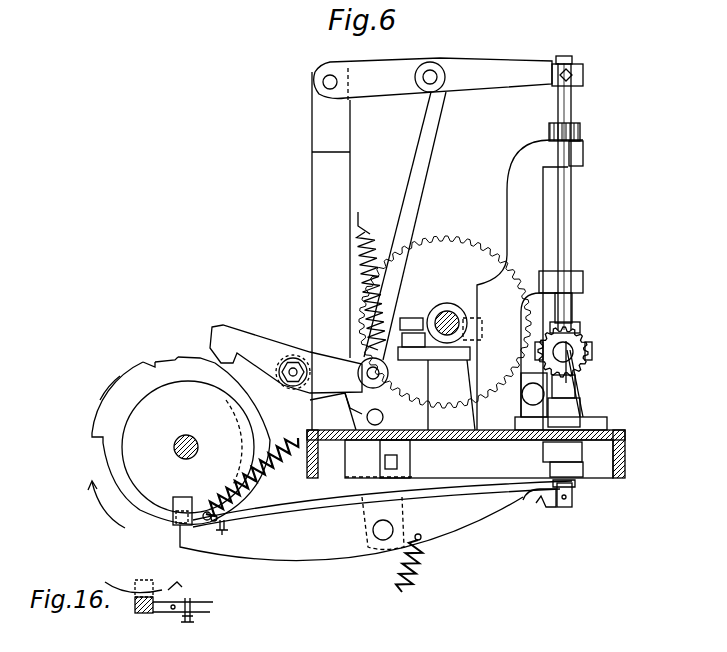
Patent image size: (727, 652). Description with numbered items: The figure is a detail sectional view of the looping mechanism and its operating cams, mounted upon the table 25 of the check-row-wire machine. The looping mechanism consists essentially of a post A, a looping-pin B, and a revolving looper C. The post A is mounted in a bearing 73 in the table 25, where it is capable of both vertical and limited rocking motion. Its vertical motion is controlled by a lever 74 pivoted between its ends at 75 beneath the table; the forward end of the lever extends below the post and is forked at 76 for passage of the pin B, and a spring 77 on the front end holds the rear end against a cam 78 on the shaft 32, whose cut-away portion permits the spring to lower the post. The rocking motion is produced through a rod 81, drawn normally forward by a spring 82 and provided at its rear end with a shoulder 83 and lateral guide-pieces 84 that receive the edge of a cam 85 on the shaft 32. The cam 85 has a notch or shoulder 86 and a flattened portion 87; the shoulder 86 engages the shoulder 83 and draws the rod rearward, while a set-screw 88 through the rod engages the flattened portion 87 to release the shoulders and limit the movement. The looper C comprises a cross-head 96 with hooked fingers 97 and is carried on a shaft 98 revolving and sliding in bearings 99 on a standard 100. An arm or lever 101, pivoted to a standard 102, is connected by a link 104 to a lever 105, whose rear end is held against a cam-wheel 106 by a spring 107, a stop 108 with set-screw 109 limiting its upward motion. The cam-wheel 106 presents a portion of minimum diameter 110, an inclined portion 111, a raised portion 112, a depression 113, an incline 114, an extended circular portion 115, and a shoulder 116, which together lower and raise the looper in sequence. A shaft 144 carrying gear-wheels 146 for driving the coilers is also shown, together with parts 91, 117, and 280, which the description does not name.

In FIG. 6, the table 25 is at (627, 457).
In FIG. 6, the shaft 32 is at (190, 434).
In FIG. 6, the bearing 73 is at (586, 411).
In FIG. 6, the lever 74 is at (461, 533).
In FIG. 6, the pivot 75 is at (382, 542).
In FIG. 6, the fork 76 is at (574, 498).
In FIG. 6, the spring 77 is at (423, 565).
In FIG. 6, the cam 78 is at (234, 412).
In FIG. 6, the rod 81 is at (273, 508).
In FIG. 16, the rod 81 is at (205, 612).
In FIG. 6, the spring 82 is at (281, 460).
In FIG. 16, the shoulder 83 is at (146, 614).
In FIG. 6, the lateral guide-pieces 84 is at (184, 496).
In FIG. 16, the lateral guide-pieces 84 is at (168, 522).
In FIG. 6, the cam 85 is at (188, 447).
In FIG. 16, the cam 85 is at (128, 592).
In FIG. 6, the notch or shoulder 86 is at (215, 508).
In FIG. 16, the notch or shoulder 86 is at (184, 588).
In FIG. 6, the flattened portion 87 is at (232, 489).
In FIG. 6, the set-screw 88 is at (226, 531).
In FIG. 16, the set-screw 88 is at (188, 624).
In FIG. 6, the hook 91 is at (550, 505).
In FIG. 6, the cross-head 96 is at (575, 320).
In FIG. 6, the hooked fingers 97 is at (590, 339).
In FIG. 6, the shaft 98 is at (573, 225).
In FIG. 6, the bearings 99 is at (584, 156).
In FIG. 6, the standard 100 is at (511, 197).
In FIG. 6, the arm or lever 101 is at (433, 79).
In FIG. 6, the standard 102 is at (346, 141).
In FIG. 6, the link 104 is at (422, 152).
In FIG. 6, the lever 105 is at (354, 376).
In FIG. 6, the cam-wheel 106 is at (117, 380).
In FIG. 6, the spring 107 is at (372, 238).
In FIG. 6, the stop 108 is at (425, 351).
In FIG. 6, the set-screw 109 is at (427, 318).
In FIG. 6, the portion of minimum diameter 110 is at (252, 405).
In FIG. 6, the inclined portion 111 is at (216, 361).
In FIG. 6, the raised portion 112 is at (176, 359).
In FIG. 6, the depression or cut-away portion 113 is at (160, 360).
In FIG. 6, the incline 114 is at (144, 361).
In FIG. 6, the extended circular portion 115 is at (108, 393).
In FIG. 6, the shoulder 116 is at (95, 438).
In FIG. 6, the knurled nut 117 is at (581, 137).
In FIG. 6, the shaft 144 is at (450, 314).
In FIG. 6, the gear-wheels 146 is at (464, 238).
In FIG. 6, the block 280 is at (579, 471).
In FIG. 6, the post A is at (577, 390).
In FIG. 6, the looping-pin B is at (580, 368).
In FIG. 6, the revolving looper C is at (583, 290).